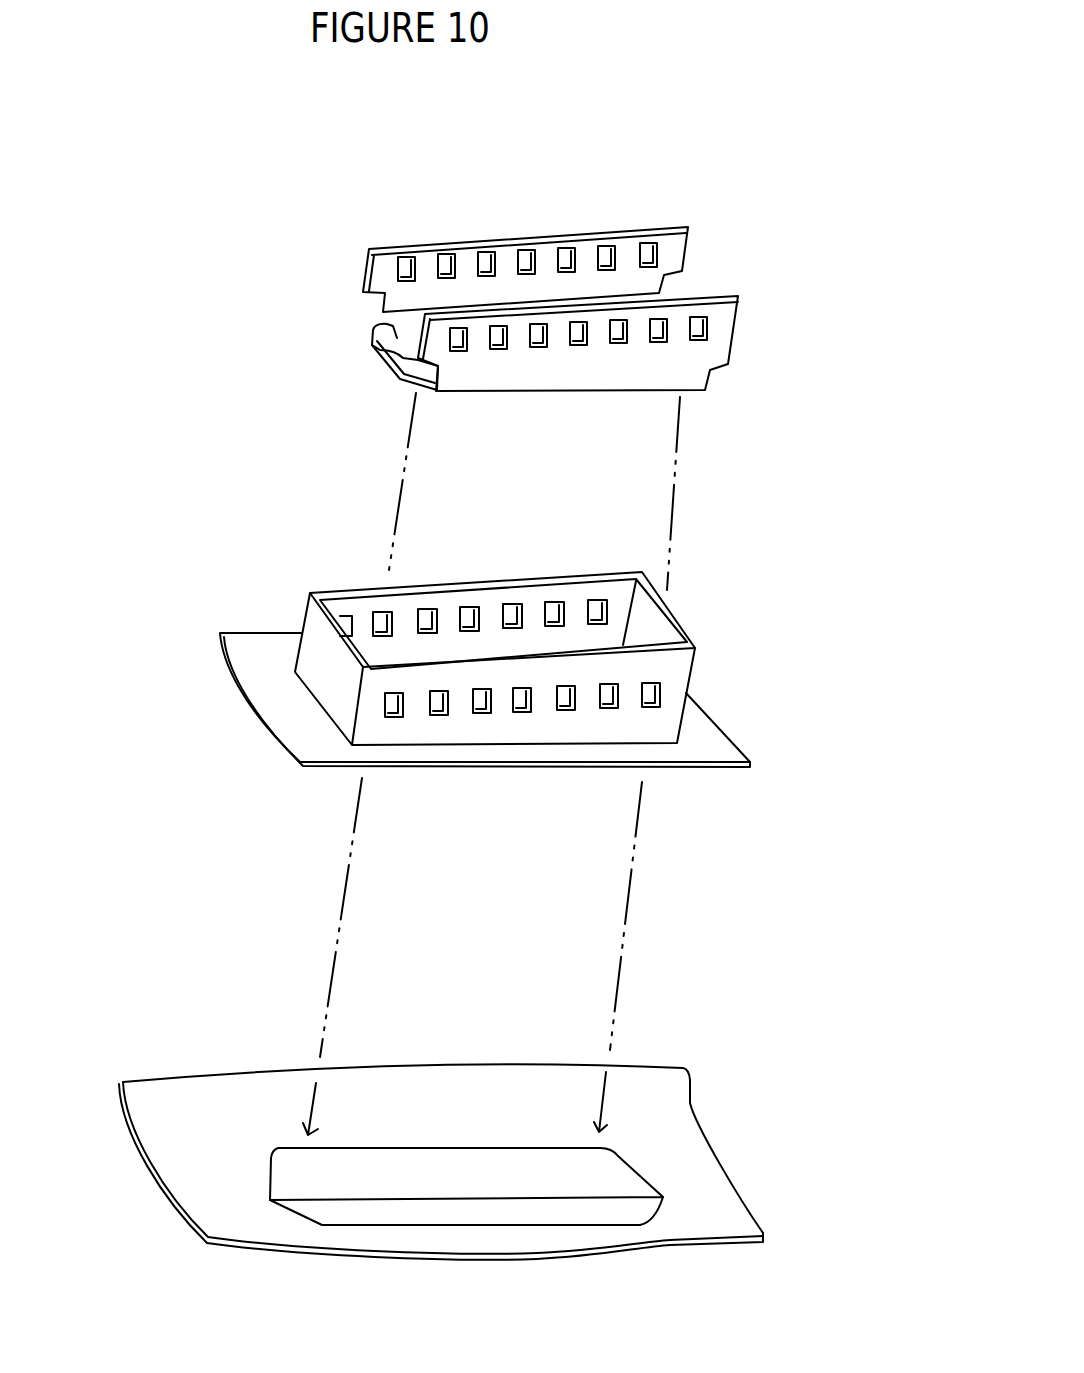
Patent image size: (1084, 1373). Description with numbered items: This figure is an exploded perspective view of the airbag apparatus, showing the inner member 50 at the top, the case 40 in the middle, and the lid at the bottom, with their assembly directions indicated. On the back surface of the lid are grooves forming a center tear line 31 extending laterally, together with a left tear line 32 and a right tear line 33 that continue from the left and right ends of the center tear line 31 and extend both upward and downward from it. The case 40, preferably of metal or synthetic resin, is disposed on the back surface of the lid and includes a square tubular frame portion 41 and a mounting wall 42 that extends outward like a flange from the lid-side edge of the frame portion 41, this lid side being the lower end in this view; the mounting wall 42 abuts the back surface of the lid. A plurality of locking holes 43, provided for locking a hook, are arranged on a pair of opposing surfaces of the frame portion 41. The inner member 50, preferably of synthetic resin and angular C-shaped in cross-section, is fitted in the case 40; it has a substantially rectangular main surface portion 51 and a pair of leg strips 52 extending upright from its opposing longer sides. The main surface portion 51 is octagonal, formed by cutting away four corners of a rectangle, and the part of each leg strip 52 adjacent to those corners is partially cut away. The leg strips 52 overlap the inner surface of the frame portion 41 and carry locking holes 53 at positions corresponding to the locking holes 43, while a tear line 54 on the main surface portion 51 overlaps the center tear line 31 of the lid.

The center tear line 31 is at (390, 1197).
The left tear line 32 is at (273, 1163).
The right tear line 33 is at (479, 1148).
The case 40 is at (677, 576).
The frame portion 41 is at (688, 628).
The mounting wall 42 is at (690, 695).
The locking holes 43 is at (381, 612).
The inner member 50 is at (686, 205).
The main surface portion 51 is at (372, 324).
The leg strips 52 is at (365, 249).
The locking holes 53 is at (407, 257).
The tear line 54 is at (371, 347).